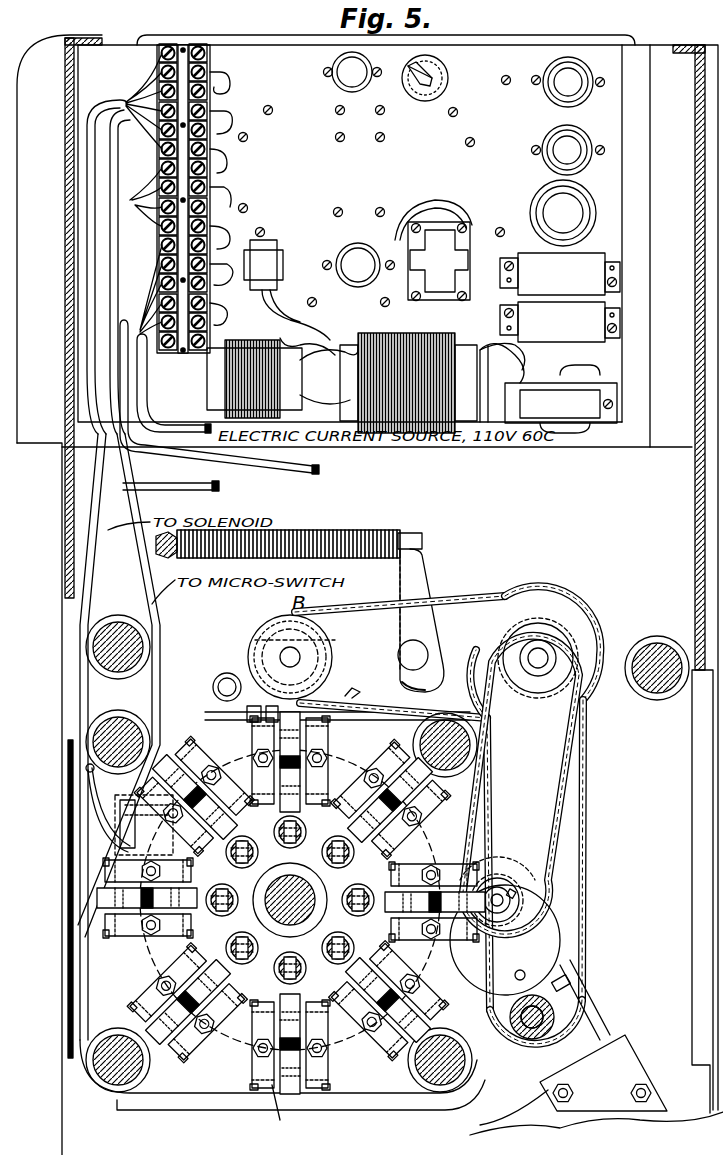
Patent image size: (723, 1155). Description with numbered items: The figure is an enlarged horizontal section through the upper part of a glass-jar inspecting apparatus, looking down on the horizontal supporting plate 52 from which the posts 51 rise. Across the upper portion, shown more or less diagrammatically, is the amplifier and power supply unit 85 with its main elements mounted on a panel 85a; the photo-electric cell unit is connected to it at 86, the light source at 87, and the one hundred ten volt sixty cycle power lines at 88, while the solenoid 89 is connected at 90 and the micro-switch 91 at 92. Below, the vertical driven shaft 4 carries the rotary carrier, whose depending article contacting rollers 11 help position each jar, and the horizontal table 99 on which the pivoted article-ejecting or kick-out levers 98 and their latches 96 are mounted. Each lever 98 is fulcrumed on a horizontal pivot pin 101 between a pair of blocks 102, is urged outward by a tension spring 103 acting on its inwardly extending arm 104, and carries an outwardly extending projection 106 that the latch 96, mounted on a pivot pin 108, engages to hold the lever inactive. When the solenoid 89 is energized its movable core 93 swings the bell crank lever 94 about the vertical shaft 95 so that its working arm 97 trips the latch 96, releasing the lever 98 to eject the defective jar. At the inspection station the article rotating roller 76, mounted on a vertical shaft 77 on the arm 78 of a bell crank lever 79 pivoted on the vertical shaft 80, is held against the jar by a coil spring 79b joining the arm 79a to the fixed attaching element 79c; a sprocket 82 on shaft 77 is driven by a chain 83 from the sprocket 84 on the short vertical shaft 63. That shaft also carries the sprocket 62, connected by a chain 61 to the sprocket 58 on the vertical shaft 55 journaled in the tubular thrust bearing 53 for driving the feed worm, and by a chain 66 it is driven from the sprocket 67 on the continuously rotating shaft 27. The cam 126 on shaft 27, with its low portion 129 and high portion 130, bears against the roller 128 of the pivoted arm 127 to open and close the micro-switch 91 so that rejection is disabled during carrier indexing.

The vertical driven shaft 4 is at (292, 875).
The article contacting rollers 11 is at (205, 750).
The vertical shaft 27 is at (512, 900).
The posts 51 is at (100, 648).
The horizontal supporting plate 52 is at (370, 595).
The tubular thrust bearing 53 is at (560, 1020).
The vertical shaft 55 is at (572, 990).
The sprocket 58 is at (510, 1012).
The chain 61 is at (589, 830).
The sprocket 62 is at (538, 658).
The short vertical shaft 63 is at (541, 650).
The chain 66 is at (565, 752).
The sprocket 67 is at (501, 888).
The article rotating roller 76 is at (258, 634).
The vertical shaft 77 is at (280, 657).
The arm 78 is at (400, 640).
The bell crank lever 79 is at (432, 678).
The arm 79a is at (430, 570).
The coil spring 79b is at (375, 528).
The fixed attaching element 79c is at (168, 558).
The vertical shaft 80 is at (430, 650).
The sprocket 82 is at (315, 644).
The chain 83 is at (470, 598).
The sprocket 84 is at (520, 608).
The amplifier and power supply unit 85 is at (488, 35).
The panel 85a is at (632, 228).
The electrical connection to photo-electric cell unit 86 is at (308, 465).
The electrical connection to light source 87 is at (217, 494).
The power line connection 88 is at (172, 425).
The solenoid 89 is at (130, 825).
The electrical connection of solenoid 90 is at (80, 700).
The micro-switch 91 is at (592, 1030).
The electrical connection of micro-switch 92 is at (162, 600).
The movable core 93 is at (144, 825).
The bell crank lever 94 is at (212, 715).
The vertical shaft 95 is at (213, 684).
The pivoted latch 96 is at (284, 1114).
The working arm 97 is at (355, 696).
The article-ejecting or kick-out lever 98 is at (148, 920).
The horizontal plate or table 99 is at (148, 986).
The horizontal pivot pin 101 is at (218, 1015).
The blocks 102 is at (412, 862).
The tension spring 103 is at (365, 885).
The inwardly extending arm 104 is at (325, 968).
The outwardly extending projection 106 is at (122, 935).
The horizontal pivot pin 108 is at (255, 1080).
The cam 126 is at (522, 860).
The pivoted arm 127 is at (583, 958).
The roller 128 is at (487, 975).
The low portion 129 is at (560, 893).
The high portion 130 is at (502, 835).